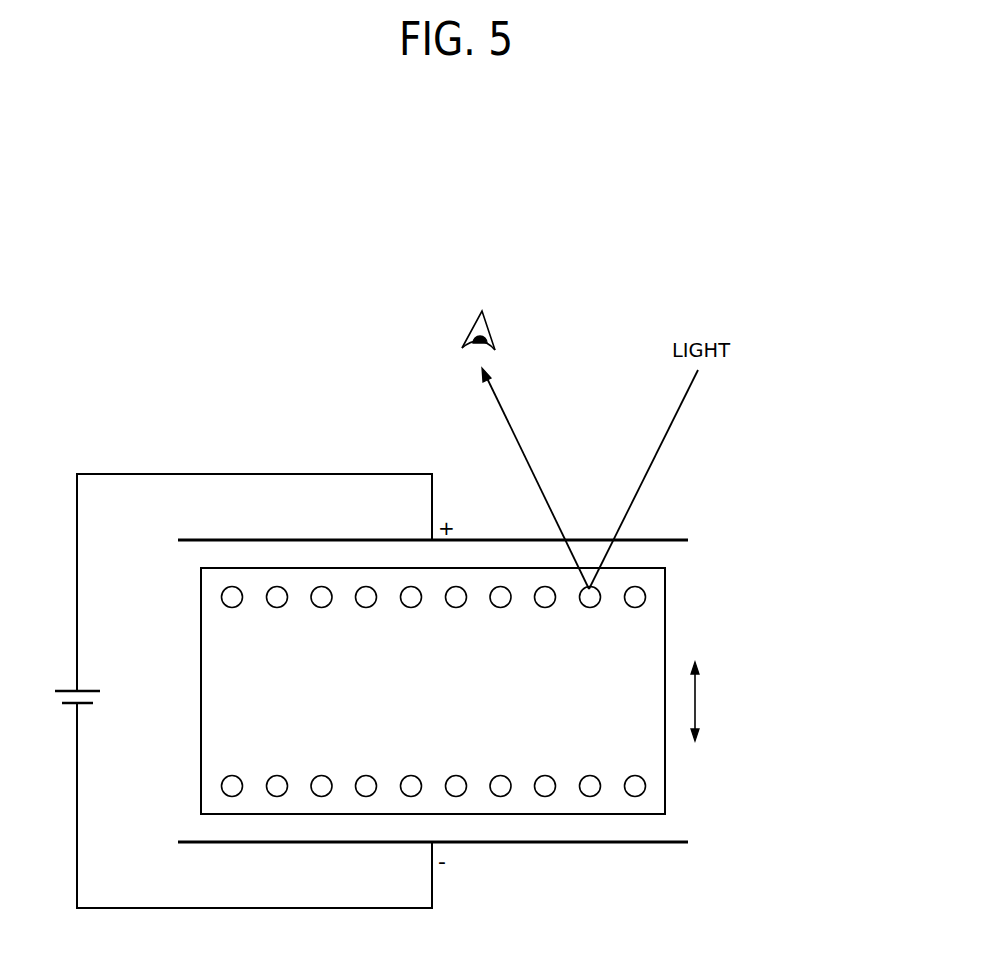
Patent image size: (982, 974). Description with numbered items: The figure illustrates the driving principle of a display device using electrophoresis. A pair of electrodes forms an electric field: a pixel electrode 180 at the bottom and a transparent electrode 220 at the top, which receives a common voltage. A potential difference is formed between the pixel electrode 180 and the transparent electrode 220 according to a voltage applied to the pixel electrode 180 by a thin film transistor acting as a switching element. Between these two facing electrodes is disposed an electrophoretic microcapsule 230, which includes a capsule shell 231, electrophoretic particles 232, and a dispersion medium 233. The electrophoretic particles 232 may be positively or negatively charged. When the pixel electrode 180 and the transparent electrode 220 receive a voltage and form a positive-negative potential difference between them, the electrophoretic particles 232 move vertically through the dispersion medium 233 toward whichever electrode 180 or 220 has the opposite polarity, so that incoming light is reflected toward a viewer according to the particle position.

The pixel electrode 180 is at (662, 843).
The transparent electrode 220 is at (676, 538).
The electrophoretic microcapsule 230 is at (800, 608).
The capsule shell 231 is at (665, 765).
The electrophoretic particle 232 is at (637, 593).
The dispersion medium 233 is at (637, 633).